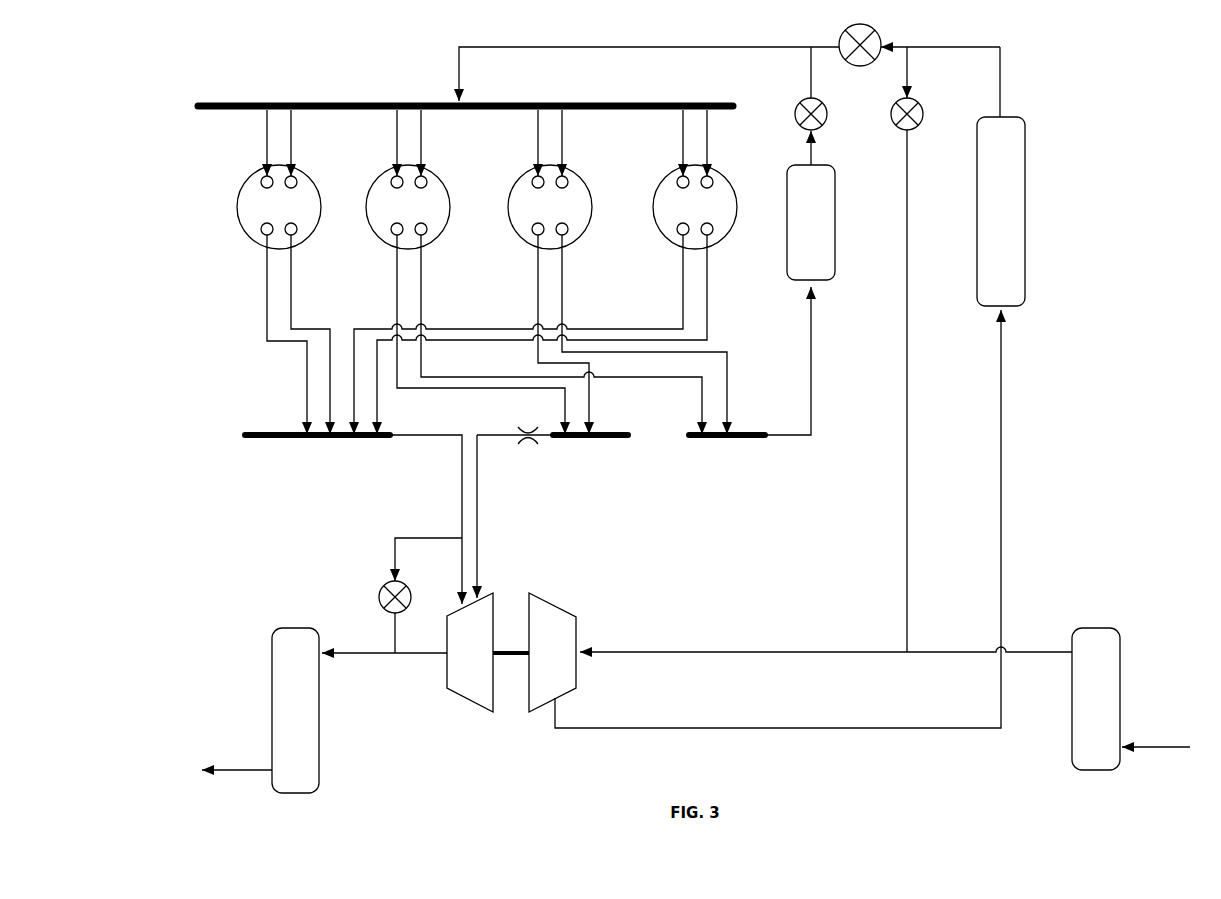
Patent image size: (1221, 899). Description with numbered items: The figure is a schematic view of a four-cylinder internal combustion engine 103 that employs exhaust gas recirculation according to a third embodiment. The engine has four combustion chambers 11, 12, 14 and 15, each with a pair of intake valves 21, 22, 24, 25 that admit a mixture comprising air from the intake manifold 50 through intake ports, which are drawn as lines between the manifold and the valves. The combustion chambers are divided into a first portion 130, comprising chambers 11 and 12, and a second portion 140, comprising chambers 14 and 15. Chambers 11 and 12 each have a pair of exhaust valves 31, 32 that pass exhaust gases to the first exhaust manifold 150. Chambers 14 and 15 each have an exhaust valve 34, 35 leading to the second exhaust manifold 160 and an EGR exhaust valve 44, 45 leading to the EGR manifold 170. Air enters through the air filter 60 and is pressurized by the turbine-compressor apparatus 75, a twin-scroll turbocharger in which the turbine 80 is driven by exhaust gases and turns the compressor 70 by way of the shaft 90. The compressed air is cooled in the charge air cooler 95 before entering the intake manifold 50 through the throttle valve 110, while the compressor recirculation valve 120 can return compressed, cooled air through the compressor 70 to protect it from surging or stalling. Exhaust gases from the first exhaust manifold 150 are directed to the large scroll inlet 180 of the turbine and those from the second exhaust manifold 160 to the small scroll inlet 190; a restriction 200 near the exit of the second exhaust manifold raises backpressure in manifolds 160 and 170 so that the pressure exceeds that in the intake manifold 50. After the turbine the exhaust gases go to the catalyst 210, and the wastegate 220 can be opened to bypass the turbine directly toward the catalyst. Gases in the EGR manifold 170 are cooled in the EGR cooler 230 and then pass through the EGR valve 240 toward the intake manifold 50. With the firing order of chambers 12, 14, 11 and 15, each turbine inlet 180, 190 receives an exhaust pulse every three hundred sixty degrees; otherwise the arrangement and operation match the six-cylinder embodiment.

The engine 103 is at (190, 82).
The intake manifold 50 is at (341, 101).
The combustion chamber 11 is at (279, 207).
The combustion chamber 14 is at (408, 207).
The combustion chamber 15 is at (550, 207).
The combustion chamber 12 is at (695, 207).
The intake valves 21 is at (286, 171).
The intake valves 24 is at (415, 171).
The intake valves 25 is at (557, 171).
The intake valves 22 is at (702, 171).
The exhaust valves 31 is at (276, 238).
The exhaust valve 34 is at (392, 234).
The EGR exhaust valve 44 is at (426, 234).
The exhaust valve 35 is at (533, 234).
The EGR exhaust valve 45 is at (567, 234).
The exhaust valves 32 is at (692, 238).
The second portion 140 is at (498, 233).
The first portion 130 is at (647, 260).
The first exhaust manifold 150 is at (273, 440).
The second exhaust manifold 160 is at (578, 440).
The EGR manifold 170 is at (720, 440).
The restriction 200 is at (522, 445).
The large scroll inlet 180 is at (458, 603).
The small scroll inlet 190 is at (490, 605).
The turbine 80 is at (470, 652).
The compressor 70 is at (552, 652).
The shaft 90 is at (515, 656).
The turbine-compressor apparatus 75 is at (487, 768).
The wastegate 220 is at (380, 590).
The catalyst 210 is at (295, 710).
The air filter 60 is at (1096, 699).
The charge air cooler 95 is at (1001, 211).
The EGR cooler 230 is at (811, 205).
The throttle valve 110 is at (845, 63).
The compressor recirculation valve 120 is at (892, 124).
The EGR valve 240 is at (795, 114).